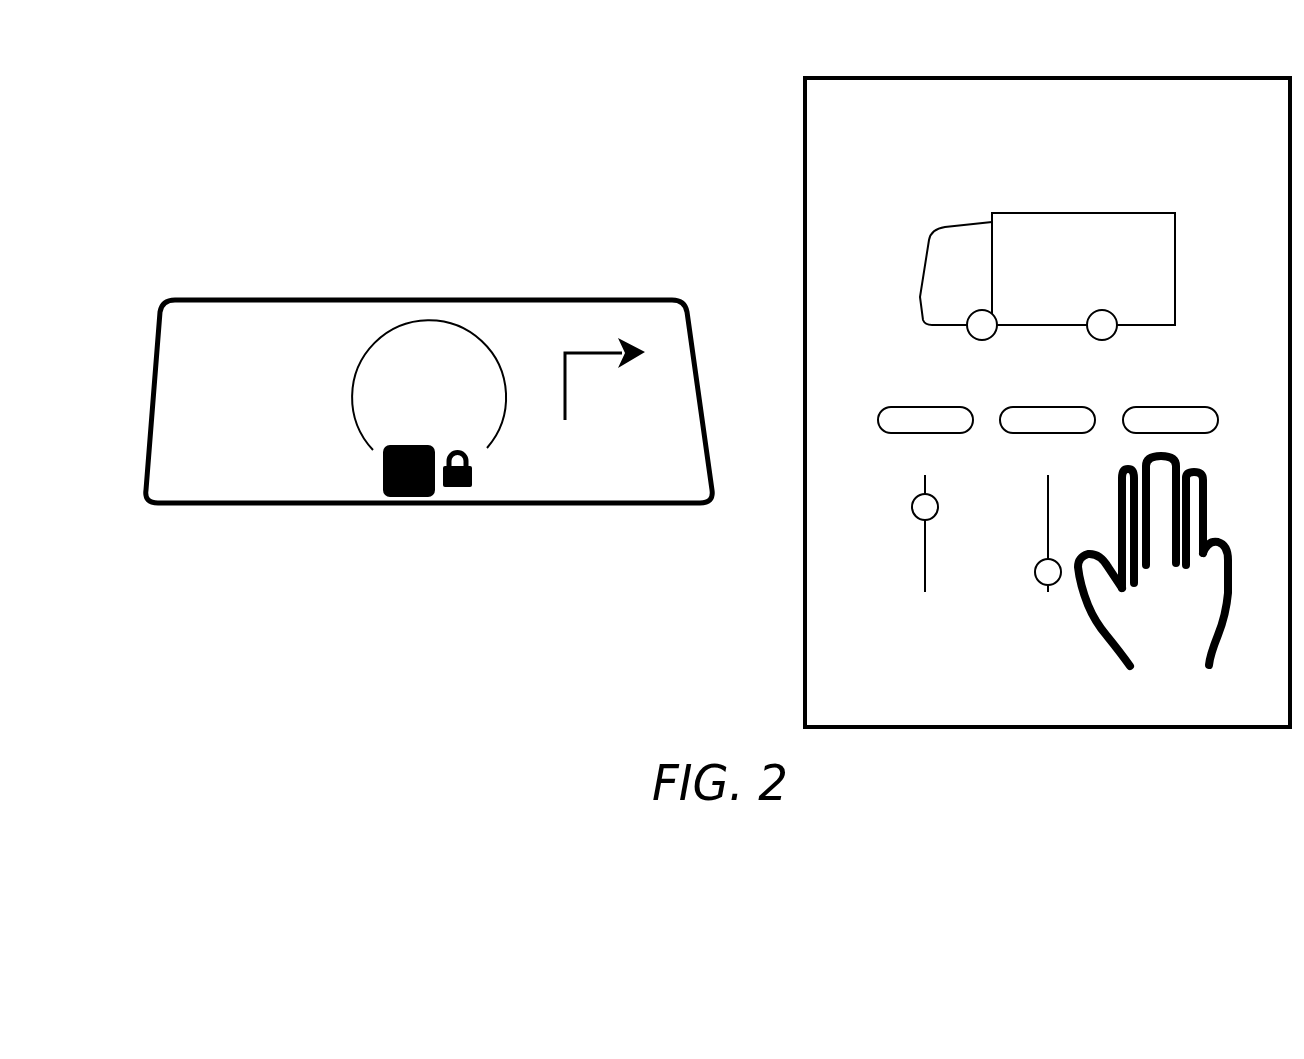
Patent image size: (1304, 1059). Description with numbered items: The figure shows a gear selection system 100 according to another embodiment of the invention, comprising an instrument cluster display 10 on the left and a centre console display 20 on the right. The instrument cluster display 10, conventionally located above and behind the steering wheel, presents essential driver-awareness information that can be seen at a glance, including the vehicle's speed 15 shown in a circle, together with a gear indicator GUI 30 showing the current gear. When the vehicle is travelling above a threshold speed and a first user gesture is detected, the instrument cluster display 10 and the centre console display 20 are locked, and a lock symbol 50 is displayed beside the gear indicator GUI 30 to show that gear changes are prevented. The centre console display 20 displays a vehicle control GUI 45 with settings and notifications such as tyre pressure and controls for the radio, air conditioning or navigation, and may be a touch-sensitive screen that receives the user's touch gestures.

The gear selection system 100 is at (321, 96).
The instrument cluster display 10 is at (205, 298).
The vehicle's speed 15 is at (429, 320).
The gear indicator GUI 30 is at (412, 497).
The lock symbol 50 is at (460, 488).
The centre console display 20 is at (918, 78).
The vehicle control GUI 45 is at (1168, 107).